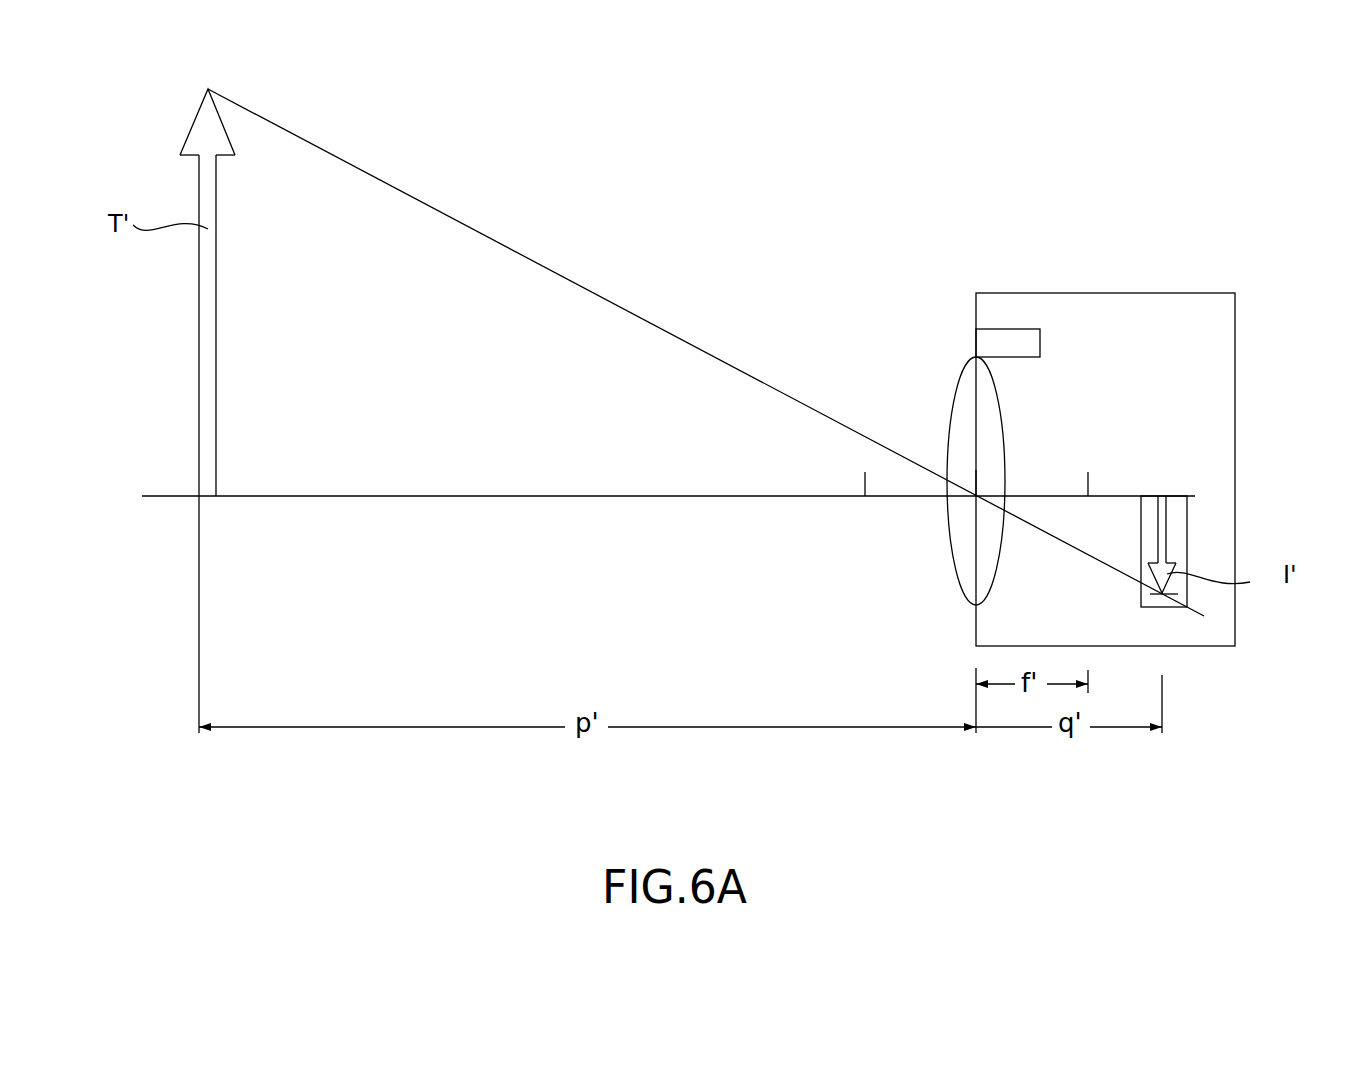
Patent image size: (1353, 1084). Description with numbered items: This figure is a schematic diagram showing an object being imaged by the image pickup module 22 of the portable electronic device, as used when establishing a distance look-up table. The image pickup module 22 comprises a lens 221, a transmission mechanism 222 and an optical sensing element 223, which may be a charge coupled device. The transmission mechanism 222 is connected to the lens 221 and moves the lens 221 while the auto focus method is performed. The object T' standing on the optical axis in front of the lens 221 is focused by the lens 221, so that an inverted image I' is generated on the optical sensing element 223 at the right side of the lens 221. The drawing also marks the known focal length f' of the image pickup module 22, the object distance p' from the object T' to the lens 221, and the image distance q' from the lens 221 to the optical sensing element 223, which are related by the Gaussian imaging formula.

The image pickup module 22 is at (1150, 270).
The lens 221 is at (960, 413).
The transmission mechanism 222 is at (1006, 340).
The optical sensing element 223 is at (1177, 522).